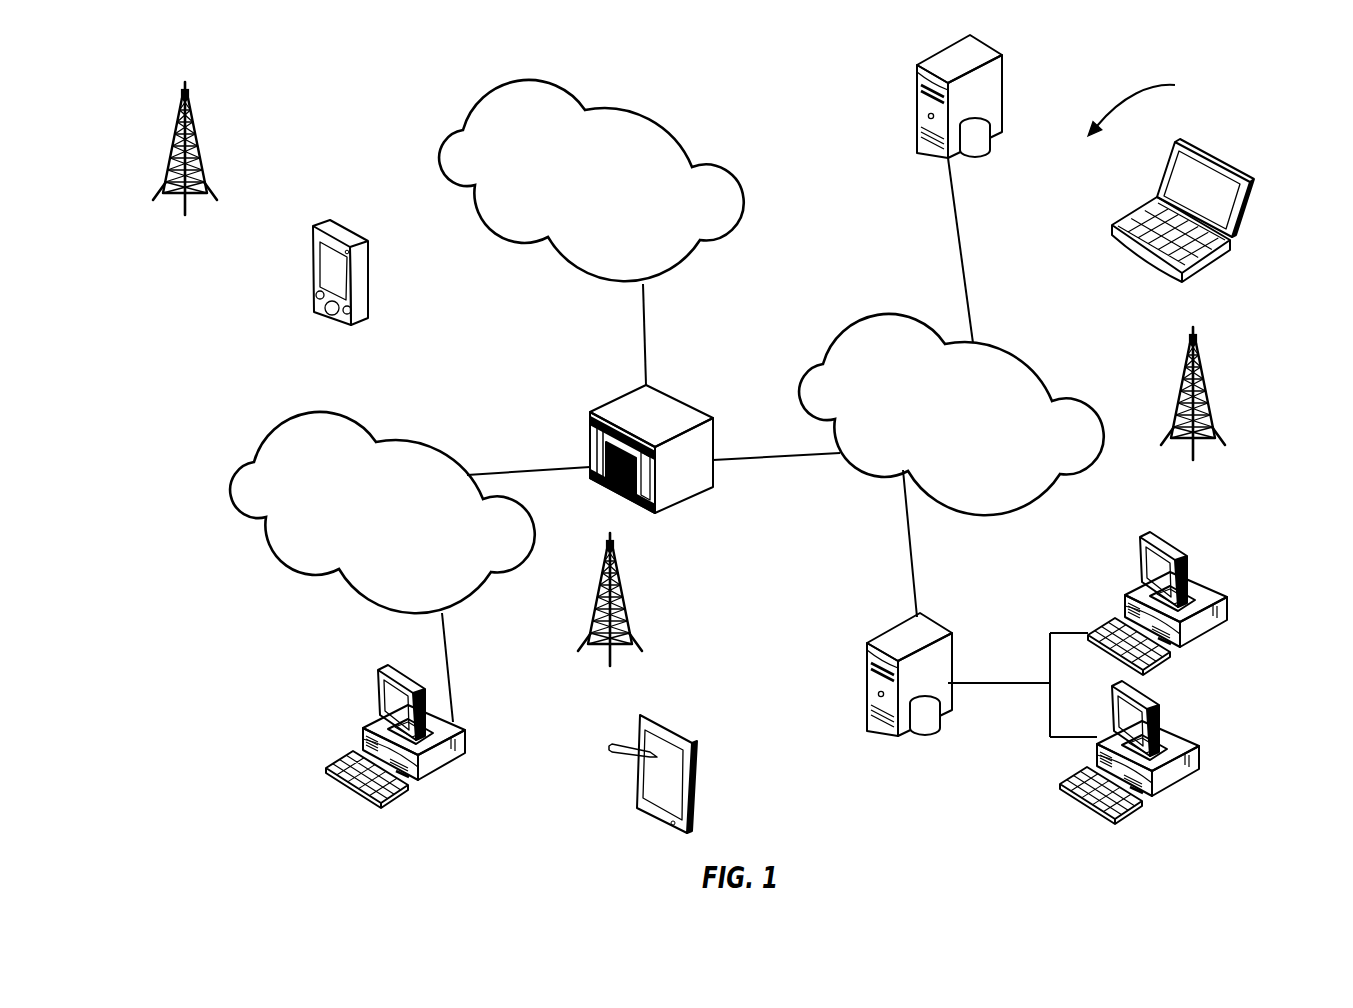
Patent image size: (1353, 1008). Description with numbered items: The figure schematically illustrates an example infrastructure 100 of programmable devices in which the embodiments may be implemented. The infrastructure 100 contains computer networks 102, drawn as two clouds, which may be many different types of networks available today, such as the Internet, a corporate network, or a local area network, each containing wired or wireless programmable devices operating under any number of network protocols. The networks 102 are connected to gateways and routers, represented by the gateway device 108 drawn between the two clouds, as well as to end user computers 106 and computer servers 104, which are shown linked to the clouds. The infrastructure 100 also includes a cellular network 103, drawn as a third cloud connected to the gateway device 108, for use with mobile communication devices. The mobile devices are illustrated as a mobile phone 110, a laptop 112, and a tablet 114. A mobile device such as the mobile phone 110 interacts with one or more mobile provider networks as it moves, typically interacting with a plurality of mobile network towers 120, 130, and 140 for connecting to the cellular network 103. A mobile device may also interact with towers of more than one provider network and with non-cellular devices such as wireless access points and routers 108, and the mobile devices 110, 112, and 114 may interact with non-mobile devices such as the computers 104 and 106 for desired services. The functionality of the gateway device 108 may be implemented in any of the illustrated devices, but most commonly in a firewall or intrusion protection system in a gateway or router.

The infrastructure 100 is at (1149, 102).
The computer networks 102 is at (357, 428).
The cellular network 103 is at (634, 113).
The computer servers 104 is at (920, 90).
The end user computers 106 is at (1188, 562).
The gateway device 108 is at (673, 397).
The mobile phone 110 is at (345, 230).
The laptop 112 is at (1223, 167).
The tablet 114 is at (680, 730).
The mobile network tower 120 is at (610, 615).
The mobile network tower 130 is at (1193, 409).
The mobile network tower 140 is at (185, 163).